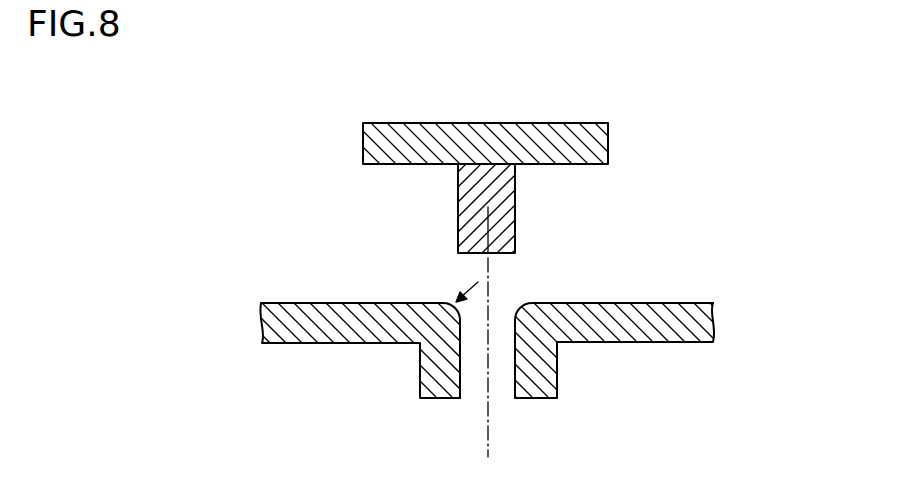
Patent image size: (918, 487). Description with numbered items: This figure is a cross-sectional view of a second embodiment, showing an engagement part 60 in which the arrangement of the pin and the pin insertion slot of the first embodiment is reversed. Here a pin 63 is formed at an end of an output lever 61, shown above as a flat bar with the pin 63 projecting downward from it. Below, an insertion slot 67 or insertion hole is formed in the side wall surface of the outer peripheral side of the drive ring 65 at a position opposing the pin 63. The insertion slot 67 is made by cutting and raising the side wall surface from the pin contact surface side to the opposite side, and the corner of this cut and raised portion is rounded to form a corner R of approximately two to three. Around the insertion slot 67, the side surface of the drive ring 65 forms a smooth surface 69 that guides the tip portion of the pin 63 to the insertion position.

The engagement part 60 is at (475, 152).
The output lever 61 is at (573, 121).
The pin 63 is at (516, 207).
The drive ring 65 is at (630, 330).
The insertion slot 67 is at (467, 384).
The smooth surface 69 is at (576, 301).